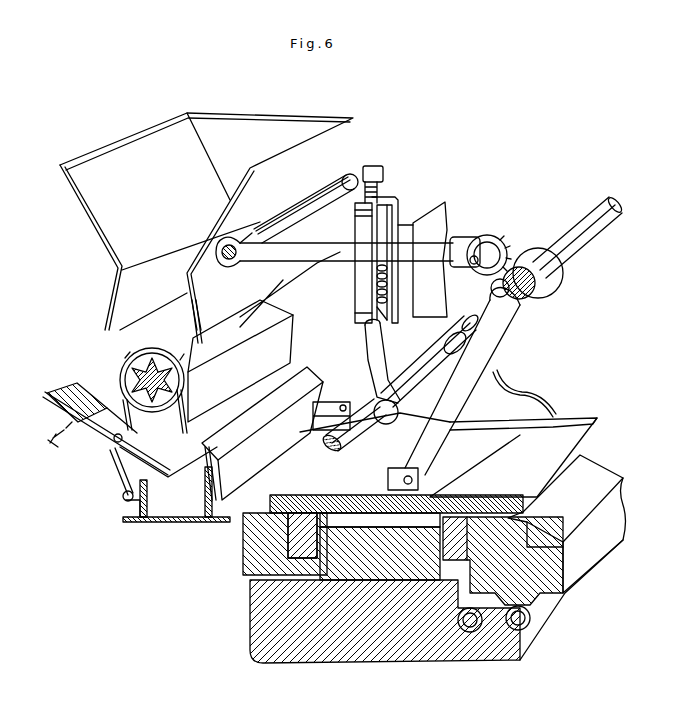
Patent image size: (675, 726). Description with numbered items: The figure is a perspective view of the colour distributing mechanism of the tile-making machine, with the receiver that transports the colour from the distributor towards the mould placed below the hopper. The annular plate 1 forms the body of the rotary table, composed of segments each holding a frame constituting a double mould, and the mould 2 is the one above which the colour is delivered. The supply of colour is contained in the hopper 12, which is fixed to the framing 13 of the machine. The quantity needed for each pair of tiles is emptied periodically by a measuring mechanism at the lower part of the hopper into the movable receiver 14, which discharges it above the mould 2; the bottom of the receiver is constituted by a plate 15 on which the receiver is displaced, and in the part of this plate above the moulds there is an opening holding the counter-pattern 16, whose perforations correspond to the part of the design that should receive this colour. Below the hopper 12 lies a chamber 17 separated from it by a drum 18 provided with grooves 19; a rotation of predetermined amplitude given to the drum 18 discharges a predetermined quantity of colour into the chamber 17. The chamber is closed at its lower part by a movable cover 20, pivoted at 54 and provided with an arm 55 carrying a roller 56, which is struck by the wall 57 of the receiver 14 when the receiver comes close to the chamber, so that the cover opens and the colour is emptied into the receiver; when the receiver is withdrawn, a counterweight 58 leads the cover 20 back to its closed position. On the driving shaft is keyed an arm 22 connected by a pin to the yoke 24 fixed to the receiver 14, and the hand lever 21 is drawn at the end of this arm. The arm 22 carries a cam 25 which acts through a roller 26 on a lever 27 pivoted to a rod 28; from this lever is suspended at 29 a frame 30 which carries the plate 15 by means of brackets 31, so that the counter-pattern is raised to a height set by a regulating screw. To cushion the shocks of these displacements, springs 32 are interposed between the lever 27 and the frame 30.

The annular plate 1 is at (393, 652).
The mould 2 is at (527, 535).
The hopper 12 is at (93, 190).
The framing 13 is at (436, 214).
The movable receiver 14 is at (225, 500).
The plate 15 is at (233, 507).
The counter-pattern 16 is at (380, 520).
The chamber 17 is at (118, 400).
The drum 18 is at (185, 397).
The grooves 19 is at (130, 373).
The movable cover 20 is at (133, 453).
The hand lever 21 is at (593, 233).
The arm 22 is at (492, 338).
The yoke 24 is at (327, 417).
The cam 25 is at (492, 283).
The roller 26 is at (491, 245).
The lever 27 is at (332, 253).
The rod 28 is at (294, 230).
The suspension point 29 is at (403, 223).
The frame 30 is at (372, 352).
The brackets 31 is at (517, 408).
The springs 32 is at (383, 307).
The pivot 54 is at (125, 438).
The arm 55 is at (120, 477).
The roller 56 is at (125, 493).
The wall 57 is at (133, 498).
The counterweight 58 is at (72, 443).